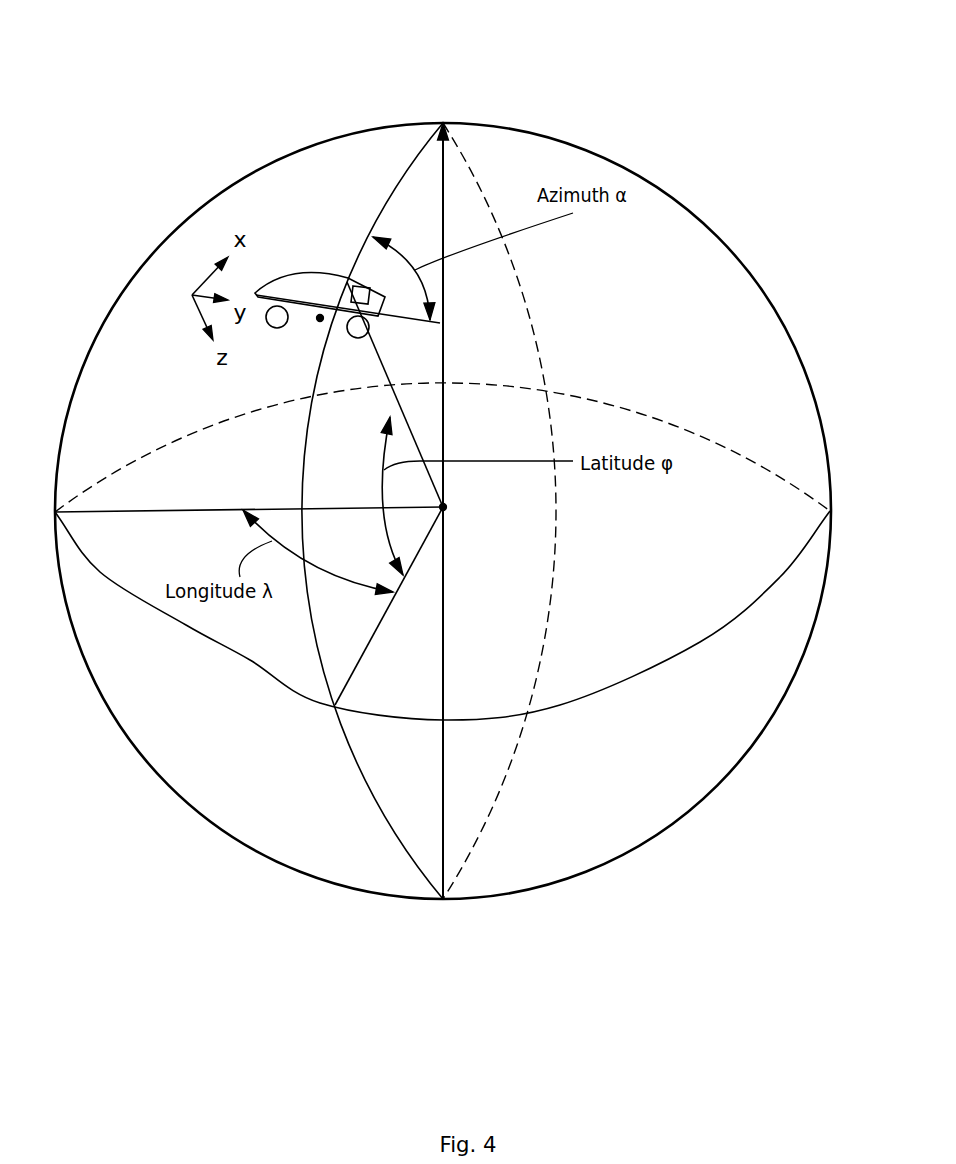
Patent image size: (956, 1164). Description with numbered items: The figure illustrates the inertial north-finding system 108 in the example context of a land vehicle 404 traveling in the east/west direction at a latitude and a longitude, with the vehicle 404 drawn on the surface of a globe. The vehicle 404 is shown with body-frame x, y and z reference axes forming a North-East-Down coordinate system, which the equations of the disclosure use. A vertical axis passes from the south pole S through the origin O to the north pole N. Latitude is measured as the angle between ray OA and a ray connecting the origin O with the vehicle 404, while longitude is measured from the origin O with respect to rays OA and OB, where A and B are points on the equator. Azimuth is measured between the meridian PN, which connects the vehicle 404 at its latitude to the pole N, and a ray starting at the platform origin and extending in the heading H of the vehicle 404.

The system 108 is at (347, 282).
The vehicle 404 is at (320, 294).
The north pole point of meridian PN N is at (447, 108).
The south pole S is at (443, 912).
The origin O is at (462, 511).
The point A of ray OA A is at (379, 629).
The point B of ray OB B is at (249, 521).
The heading H is at (440, 313).